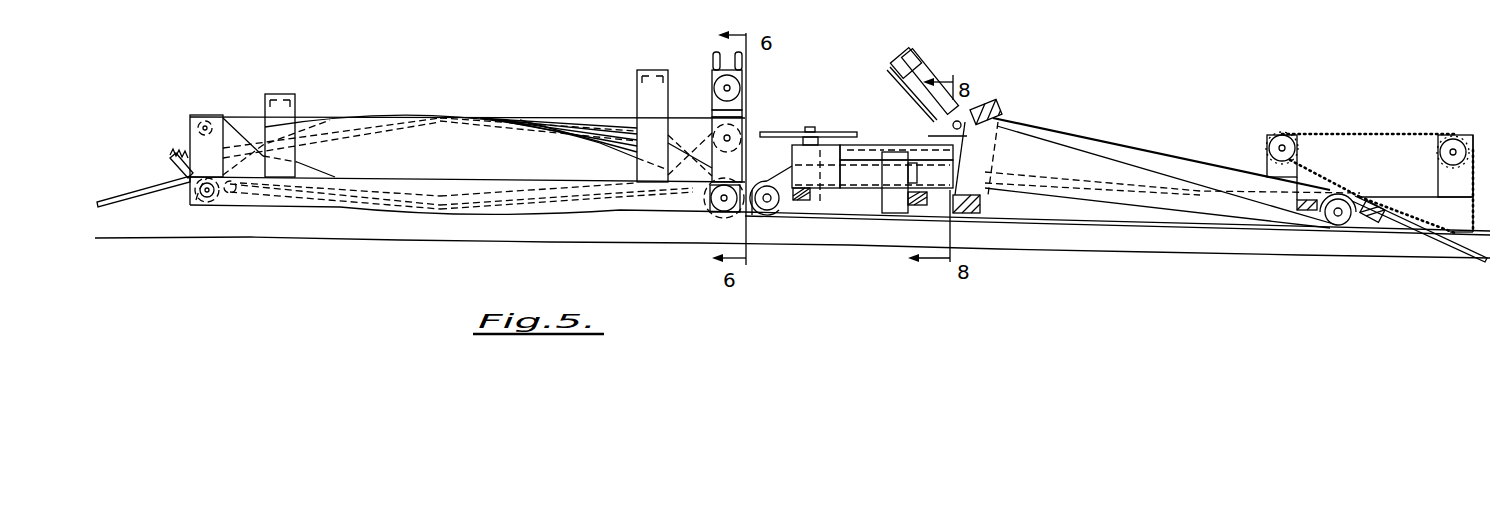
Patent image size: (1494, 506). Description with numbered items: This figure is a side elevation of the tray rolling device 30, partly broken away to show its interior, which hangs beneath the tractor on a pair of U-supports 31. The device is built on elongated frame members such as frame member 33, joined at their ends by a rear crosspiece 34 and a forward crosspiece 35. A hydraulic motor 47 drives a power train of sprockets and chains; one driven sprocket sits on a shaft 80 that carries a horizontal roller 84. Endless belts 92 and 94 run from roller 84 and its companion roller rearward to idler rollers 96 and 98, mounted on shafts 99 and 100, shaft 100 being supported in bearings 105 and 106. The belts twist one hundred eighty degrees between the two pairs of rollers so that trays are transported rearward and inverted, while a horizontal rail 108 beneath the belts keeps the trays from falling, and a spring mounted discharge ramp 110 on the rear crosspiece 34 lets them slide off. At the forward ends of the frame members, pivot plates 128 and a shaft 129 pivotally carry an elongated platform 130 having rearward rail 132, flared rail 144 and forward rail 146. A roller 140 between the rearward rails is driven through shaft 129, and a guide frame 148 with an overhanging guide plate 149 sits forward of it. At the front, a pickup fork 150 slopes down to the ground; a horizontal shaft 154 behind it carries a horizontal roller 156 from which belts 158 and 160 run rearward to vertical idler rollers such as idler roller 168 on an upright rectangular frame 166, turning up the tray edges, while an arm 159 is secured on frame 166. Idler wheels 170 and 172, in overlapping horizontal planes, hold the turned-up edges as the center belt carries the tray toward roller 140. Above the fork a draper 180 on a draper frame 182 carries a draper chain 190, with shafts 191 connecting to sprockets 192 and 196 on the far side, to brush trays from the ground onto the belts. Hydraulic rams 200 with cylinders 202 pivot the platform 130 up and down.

The rolling device 30 is at (500, 110).
The U-supports 31 is at (285, 94).
The frame member 33 is at (465, 195).
The rear crosspiece 34 is at (234, 200).
The forward crosspiece 35 is at (700, 185).
The hydraulic motor 47 is at (712, 72).
The shaft 80 is at (744, 125).
The horizontal roller 84 is at (710, 135).
The endless belt 92 is at (613, 130).
The endless belt 94 is at (570, 138).
The idler roller 96 is at (200, 113).
The idler roller 98 is at (203, 200).
The shaft 99 is at (208, 118).
The shaft 100 is at (207, 197).
The bearing 105 is at (215, 202).
The bearing 106 is at (226, 202).
The horizontal rail 108 is at (483, 212).
The discharge ramp 110 is at (120, 205).
The pivot plates 128 is at (752, 217).
The shaft 129 is at (775, 208).
The elongated platform 130 is at (850, 228).
The rearward rail 132 is at (938, 208).
The roller 140 is at (760, 215).
The flared rail 144 is at (1117, 212).
The forward rail 146 is at (1403, 197).
The guide frame 148 is at (855, 172).
The guide plate 149 is at (868, 142).
The pickup fork 150 is at (1465, 250).
The horizontal shaft 154 is at (1337, 226).
The horizontal roller 156 is at (1344, 228).
The belt 158 is at (1067, 138).
The arm 159 is at (890, 68).
The belt 160 is at (1060, 224).
The rectangular frame 166 is at (995, 110).
The idler roller 168 is at (1012, 125).
The idler wheel 170 is at (918, 142).
The idler wheel 172 is at (781, 130).
The draper 180 is at (1392, 127).
The draper frame 182 is at (1467, 132).
The draper chain 190 is at (1335, 134).
The shafts 191 is at (1279, 146).
The sprocket 192 is at (1278, 136).
The sprocket 196 is at (1447, 135).
The hydraulic rams 200 is at (919, 44).
The cylinder 202 is at (930, 76).